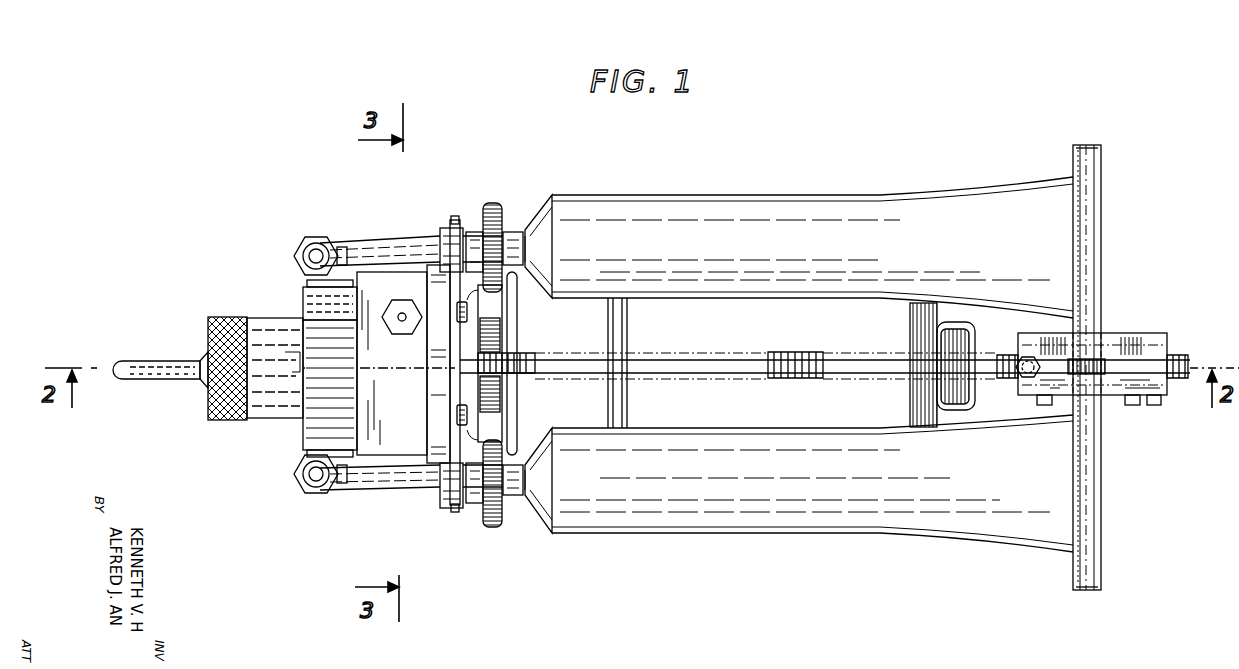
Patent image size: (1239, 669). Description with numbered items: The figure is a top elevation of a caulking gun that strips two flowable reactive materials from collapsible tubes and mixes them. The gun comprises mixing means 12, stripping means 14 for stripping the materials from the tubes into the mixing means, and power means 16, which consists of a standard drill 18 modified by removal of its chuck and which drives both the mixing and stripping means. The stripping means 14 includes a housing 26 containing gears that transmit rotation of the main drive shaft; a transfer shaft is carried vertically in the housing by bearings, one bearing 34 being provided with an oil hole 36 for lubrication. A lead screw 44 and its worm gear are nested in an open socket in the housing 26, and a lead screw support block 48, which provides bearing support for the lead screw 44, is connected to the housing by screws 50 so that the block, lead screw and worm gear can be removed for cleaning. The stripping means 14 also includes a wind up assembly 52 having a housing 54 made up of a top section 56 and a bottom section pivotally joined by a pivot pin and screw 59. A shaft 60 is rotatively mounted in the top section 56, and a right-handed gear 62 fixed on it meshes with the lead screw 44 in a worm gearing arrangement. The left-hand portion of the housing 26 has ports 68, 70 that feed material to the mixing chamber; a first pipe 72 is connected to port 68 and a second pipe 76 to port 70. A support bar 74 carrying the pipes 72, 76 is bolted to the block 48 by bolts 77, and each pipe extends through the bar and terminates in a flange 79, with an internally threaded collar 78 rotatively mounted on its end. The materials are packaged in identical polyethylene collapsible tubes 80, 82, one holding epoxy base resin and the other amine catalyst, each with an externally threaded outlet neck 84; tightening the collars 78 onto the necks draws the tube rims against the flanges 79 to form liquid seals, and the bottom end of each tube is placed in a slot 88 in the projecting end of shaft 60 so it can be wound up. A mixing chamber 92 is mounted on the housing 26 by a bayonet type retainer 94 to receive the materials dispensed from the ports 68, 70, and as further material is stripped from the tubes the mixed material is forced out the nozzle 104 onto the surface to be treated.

The mixing means 12 is at (186, 286).
The stripping means 14 is at (940, 164).
The power means 16 is at (905, 404).
The drill 18 is at (968, 332).
The housing 26 is at (398, 455).
The bearing 34 is at (396, 330).
The oil hole 36 is at (402, 316).
The lead screw 44 is at (800, 379).
The lead screw support block 48 is at (426, 398).
The screws 50 is at (500, 318).
The wind up assembly 52 is at (1165, 328).
The housing 54 is at (1109, 398).
The top section 56 is at (1165, 400).
The screw 59 is at (1020, 380).
The shaft 60 is at (1103, 275).
The gear 62 is at (1092, 358).
The port 68 is at (320, 422).
The port 70 is at (310, 297).
The first pipe 72 is at (368, 490).
The support bar 74 is at (453, 226).
The second pipe 76 is at (383, 243).
The bolts 77 is at (458, 312).
The collar 78 is at (494, 204).
The flange 79 is at (479, 210).
The collapsible tube 80 is at (818, 536).
The collapsible tube 82 is at (788, 194).
The outlet neck 84 is at (512, 232).
The slot 88 is at (1087, 150).
The mixing chamber 92 is at (178, 383).
The bayonet type retainer 94 is at (257, 318).
The nozzle 104 is at (146, 361).